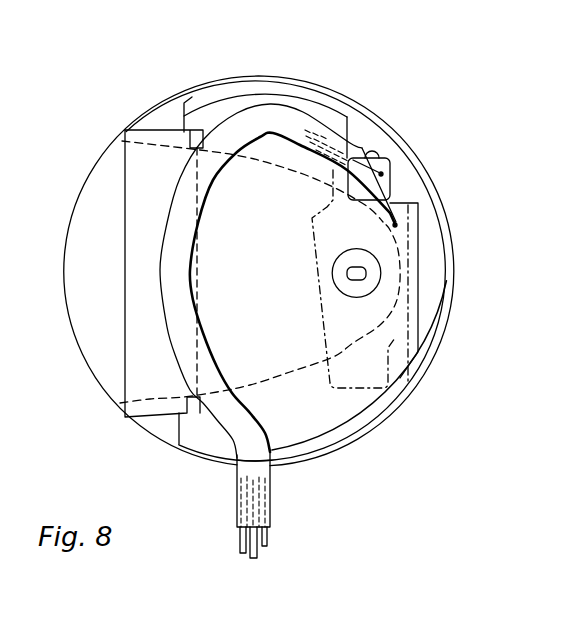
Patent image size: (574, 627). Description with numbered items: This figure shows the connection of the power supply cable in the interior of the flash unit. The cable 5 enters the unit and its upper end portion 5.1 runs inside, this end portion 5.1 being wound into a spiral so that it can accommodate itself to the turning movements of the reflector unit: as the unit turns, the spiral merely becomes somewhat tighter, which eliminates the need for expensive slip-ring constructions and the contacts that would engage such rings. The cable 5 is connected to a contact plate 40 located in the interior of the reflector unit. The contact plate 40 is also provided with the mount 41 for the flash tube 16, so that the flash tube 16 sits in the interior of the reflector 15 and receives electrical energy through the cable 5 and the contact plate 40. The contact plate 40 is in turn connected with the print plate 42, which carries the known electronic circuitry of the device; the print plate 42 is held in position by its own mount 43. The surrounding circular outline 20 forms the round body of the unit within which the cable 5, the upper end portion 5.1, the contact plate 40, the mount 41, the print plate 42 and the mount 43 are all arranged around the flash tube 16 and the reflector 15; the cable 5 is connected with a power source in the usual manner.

The cable 5 is at (272, 502).
The upper end portion of the cable 5.1 is at (182, 237).
The reflector 15 is at (293, 377).
The flash tube 16 is at (370, 278).
The housing ring 20 is at (430, 373).
The contact plate 40 is at (403, 185).
The mount for the flash tube 41 is at (392, 247).
The print plate 42 is at (317, 110).
The mount for the print plate 43 is at (135, 360).